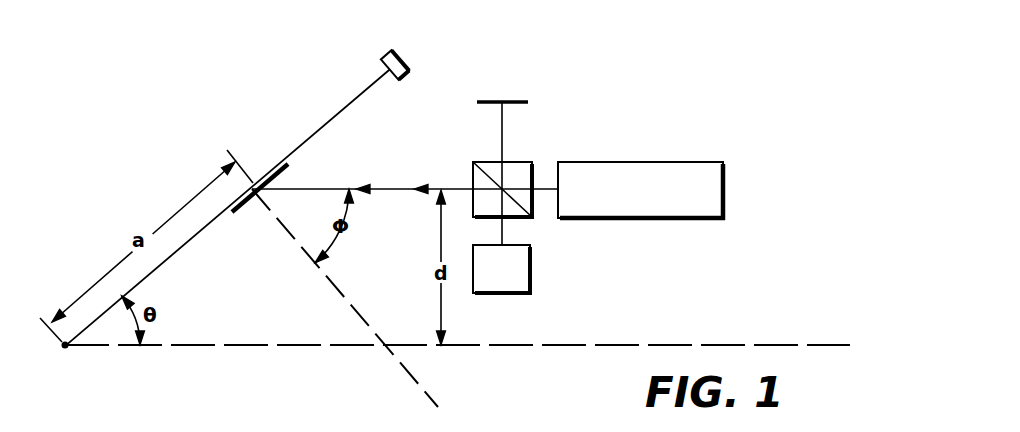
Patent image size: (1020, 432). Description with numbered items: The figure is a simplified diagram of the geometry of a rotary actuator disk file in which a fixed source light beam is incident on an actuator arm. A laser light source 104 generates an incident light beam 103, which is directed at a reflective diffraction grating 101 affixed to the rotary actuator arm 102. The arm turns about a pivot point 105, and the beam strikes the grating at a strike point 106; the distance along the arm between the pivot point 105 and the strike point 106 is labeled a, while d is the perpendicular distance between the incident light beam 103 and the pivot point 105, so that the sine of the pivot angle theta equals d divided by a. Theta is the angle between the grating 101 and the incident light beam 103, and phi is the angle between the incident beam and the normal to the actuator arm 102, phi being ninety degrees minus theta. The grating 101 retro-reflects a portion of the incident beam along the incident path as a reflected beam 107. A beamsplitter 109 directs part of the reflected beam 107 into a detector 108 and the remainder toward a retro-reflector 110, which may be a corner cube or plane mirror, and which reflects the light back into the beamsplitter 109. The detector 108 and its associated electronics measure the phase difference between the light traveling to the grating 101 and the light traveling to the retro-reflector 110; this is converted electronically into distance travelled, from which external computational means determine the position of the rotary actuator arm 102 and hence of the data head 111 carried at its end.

The reflective diffraction grating 101 is at (232, 212).
The rotary actuator arm 102 is at (327, 121).
The incident light beam 103 is at (416, 186).
The laser light source 104 is at (677, 162).
The pivot point 105 is at (65, 348).
The strike point 106 is at (262, 134).
The reflected beam 107 is at (358, 186).
The detector 108 is at (532, 265).
The beamsplitter 109 is at (529, 162).
The retro-reflector 110 is at (523, 100).
The data head 111 is at (396, 50).